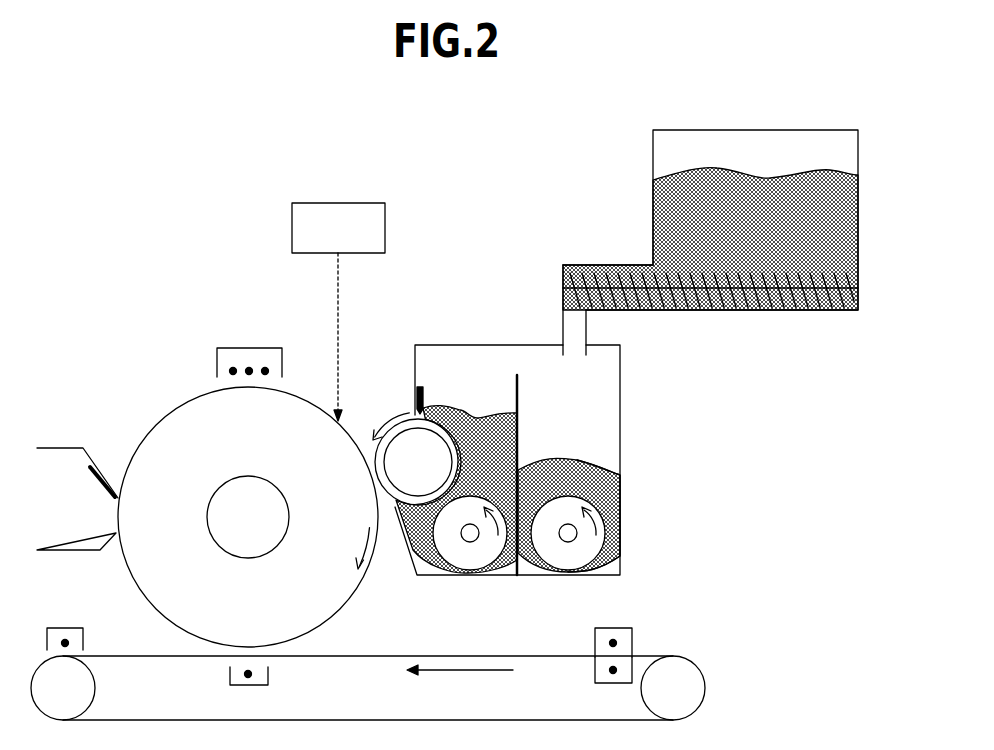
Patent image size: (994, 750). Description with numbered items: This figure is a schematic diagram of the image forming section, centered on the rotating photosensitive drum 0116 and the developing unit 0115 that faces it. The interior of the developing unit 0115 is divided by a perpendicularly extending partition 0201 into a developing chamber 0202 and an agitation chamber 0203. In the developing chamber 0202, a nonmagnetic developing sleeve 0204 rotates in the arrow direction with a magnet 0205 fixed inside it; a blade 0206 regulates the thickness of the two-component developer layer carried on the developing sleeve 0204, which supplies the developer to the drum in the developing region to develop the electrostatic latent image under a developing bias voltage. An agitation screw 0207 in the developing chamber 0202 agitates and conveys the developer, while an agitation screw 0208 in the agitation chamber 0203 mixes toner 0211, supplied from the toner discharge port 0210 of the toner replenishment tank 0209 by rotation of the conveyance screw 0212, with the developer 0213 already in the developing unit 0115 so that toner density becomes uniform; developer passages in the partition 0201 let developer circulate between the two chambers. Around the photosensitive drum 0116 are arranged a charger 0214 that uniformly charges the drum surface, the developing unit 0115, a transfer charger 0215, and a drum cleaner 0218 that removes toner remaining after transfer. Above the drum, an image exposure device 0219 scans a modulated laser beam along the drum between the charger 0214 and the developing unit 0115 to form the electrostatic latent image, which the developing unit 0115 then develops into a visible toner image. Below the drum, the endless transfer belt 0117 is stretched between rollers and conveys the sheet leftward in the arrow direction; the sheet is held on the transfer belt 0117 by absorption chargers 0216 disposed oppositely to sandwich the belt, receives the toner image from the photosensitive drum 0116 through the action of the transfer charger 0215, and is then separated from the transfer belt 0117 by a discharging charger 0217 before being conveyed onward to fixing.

The developing unit 0115 is at (624, 368).
The photosensitive drum 0116 is at (185, 426).
The transfer belt 0117 is at (391, 655).
The partition 0201 is at (551, 387).
The developing chamber 0202 is at (478, 405).
The agitation chamber 0203 is at (560, 443).
The developing sleeve 0204 is at (376, 460).
The magnet 0205 is at (381, 495).
The blade 0206 is at (416, 400).
The agitation screw 0207 is at (473, 558).
The agitation screw 0208 is at (570, 558).
The toner replenishment tank 0209 is at (652, 158).
The toner discharge port 0210 is at (562, 322).
The toner 0211 is at (757, 183).
The conveyance screw 0212 is at (753, 309).
The developer 0213 is at (612, 492).
The charger 0214 is at (257, 348).
The transfer charger 0215 is at (270, 678).
The absorption chargers 0216 is at (634, 637).
The discharging charger 0217 is at (68, 628).
The drum cleaner 0218 is at (63, 447).
The image exposure device 0219 is at (340, 203).